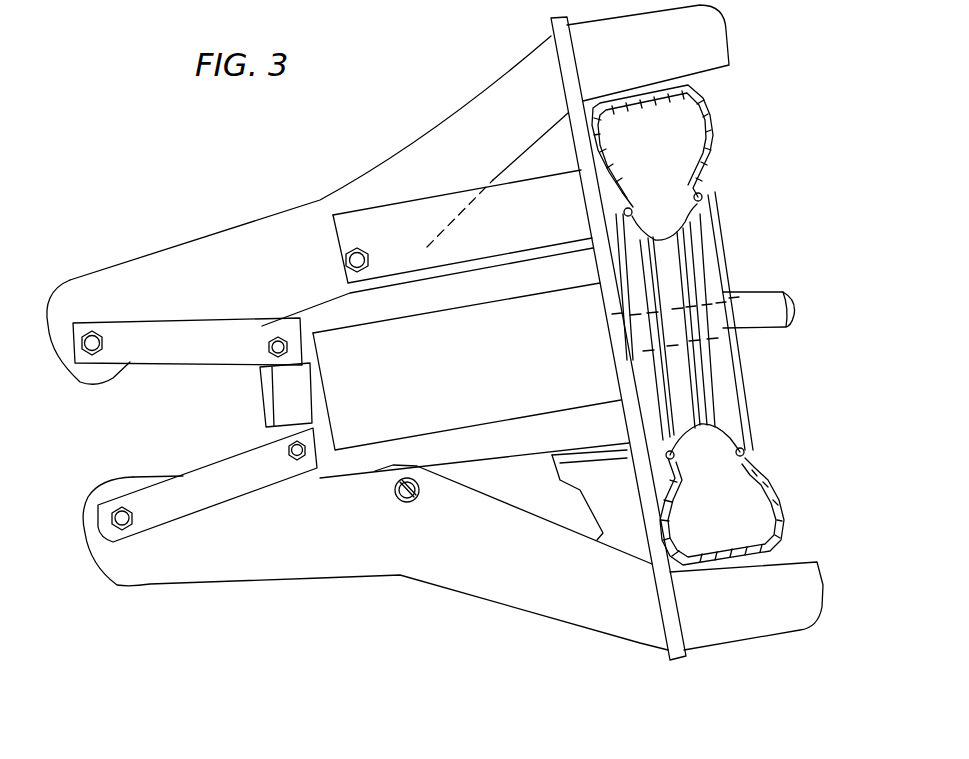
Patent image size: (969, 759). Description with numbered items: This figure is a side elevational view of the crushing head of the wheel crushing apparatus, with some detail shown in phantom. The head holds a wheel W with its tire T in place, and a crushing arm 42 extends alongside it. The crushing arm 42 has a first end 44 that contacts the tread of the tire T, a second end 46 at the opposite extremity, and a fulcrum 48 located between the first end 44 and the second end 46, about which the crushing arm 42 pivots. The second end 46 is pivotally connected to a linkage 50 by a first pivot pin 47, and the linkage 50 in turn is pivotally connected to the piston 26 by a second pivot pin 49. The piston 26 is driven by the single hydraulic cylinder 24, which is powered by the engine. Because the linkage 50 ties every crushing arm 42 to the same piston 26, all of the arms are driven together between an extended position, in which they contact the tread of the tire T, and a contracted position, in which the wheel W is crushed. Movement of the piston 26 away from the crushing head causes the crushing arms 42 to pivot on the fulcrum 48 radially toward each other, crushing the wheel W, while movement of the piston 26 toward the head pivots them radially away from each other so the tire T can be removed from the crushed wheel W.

The hydraulic cylinder 24 is at (370, 427).
The piston 26 is at (270, 392).
The crushing arm 42 is at (518, 68).
The first end 44 is at (697, 45).
The second end 46 is at (90, 298).
The first pivot pin 47 is at (91, 350).
The fulcrum 48 is at (357, 248).
The second pivot pin 49 is at (273, 325).
The linkage 50 is at (162, 348).
The tire T is at (715, 135).
The wheel W is at (710, 270).